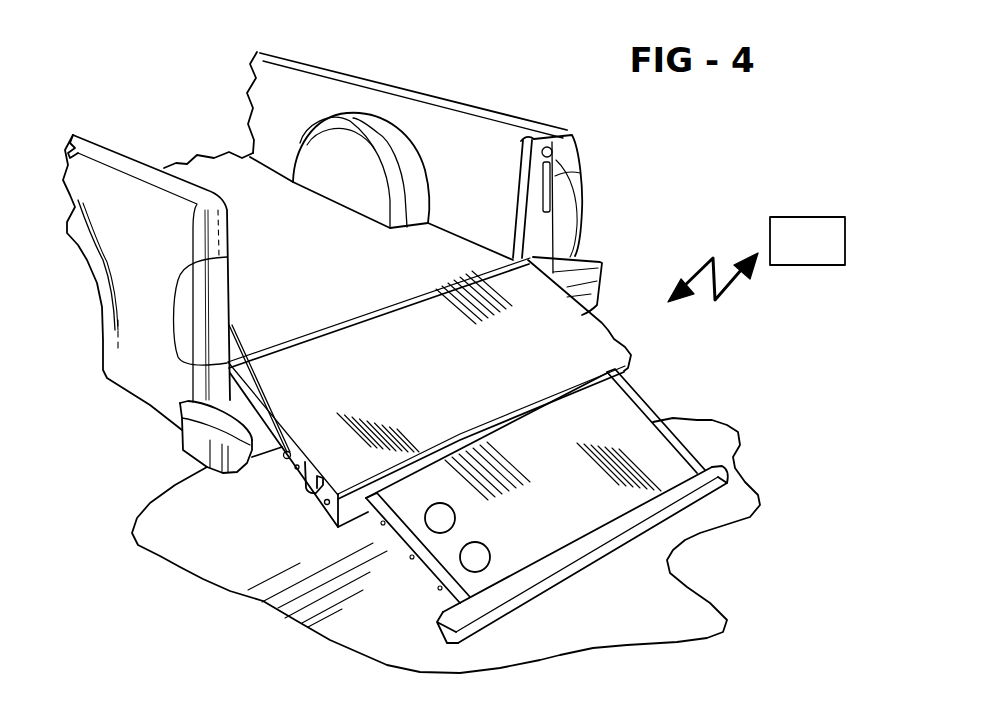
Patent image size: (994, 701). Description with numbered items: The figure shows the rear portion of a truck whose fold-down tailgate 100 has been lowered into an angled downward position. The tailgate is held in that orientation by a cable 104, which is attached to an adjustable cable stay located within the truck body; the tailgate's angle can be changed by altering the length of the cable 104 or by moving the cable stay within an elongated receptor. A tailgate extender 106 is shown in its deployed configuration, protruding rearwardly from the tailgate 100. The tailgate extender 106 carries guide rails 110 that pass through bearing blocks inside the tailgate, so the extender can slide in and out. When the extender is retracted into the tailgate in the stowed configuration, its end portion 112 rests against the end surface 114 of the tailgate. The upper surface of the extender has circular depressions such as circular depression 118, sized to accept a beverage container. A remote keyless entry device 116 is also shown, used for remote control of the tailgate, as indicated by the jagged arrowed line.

The fold-down tailgate 100 is at (548, 369).
The cable 104 is at (590, 257).
The tailgate extender 106 is at (573, 507).
The guide rails 110 is at (647, 412).
The end portion 112 is at (570, 562).
The end surface 114 is at (347, 492).
The remote keyless entry device (RKE) 116 is at (817, 223).
The circular depression 118 is at (478, 558).